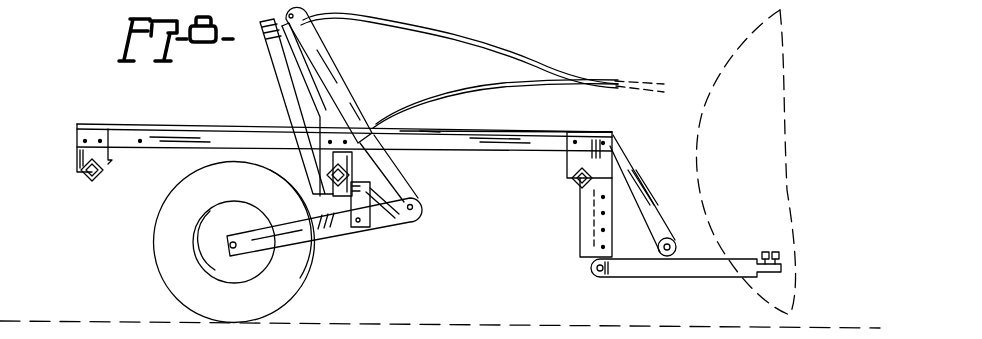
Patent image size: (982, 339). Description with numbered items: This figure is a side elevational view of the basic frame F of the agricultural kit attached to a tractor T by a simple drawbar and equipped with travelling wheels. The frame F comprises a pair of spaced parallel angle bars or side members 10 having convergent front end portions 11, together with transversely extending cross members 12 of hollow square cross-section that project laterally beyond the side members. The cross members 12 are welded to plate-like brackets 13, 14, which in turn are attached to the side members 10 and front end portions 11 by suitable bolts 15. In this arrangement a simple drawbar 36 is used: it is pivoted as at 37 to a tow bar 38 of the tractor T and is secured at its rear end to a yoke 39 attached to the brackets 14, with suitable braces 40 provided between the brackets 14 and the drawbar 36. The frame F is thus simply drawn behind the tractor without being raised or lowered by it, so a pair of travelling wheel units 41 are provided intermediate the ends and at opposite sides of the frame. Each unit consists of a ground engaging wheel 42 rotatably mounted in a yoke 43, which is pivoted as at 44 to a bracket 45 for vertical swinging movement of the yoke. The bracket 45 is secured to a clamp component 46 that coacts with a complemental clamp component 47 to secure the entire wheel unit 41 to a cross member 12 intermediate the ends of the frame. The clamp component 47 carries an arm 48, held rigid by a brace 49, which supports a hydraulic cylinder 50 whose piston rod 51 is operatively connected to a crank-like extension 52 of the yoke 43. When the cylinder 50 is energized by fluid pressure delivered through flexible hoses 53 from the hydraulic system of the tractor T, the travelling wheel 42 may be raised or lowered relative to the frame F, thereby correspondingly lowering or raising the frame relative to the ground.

The side members 10 is at (215, 135).
The convergent front end portions 11 is at (553, 150).
The cross members 12 is at (98, 180).
The plate-like brackets 13 is at (110, 162).
The plate-like brackets 14 is at (585, 232).
The bolts 15 is at (575, 122).
The drawbar 36 is at (697, 268).
The pivot 37 is at (766, 250).
The tow bar 38 is at (785, 258).
The yoke 39 is at (595, 262).
The braces 40 is at (640, 185).
The travelling wheel units 41 is at (338, 237).
The ground engaging wheel 42 is at (283, 280).
The yoke 43 is at (257, 237).
The pivot 44 is at (363, 228).
The bracket 45 is at (393, 220).
The clamp component 46 is at (370, 188).
The complemental clamp component 47 is at (327, 161).
The arm 48 is at (303, 88).
The brace 49 is at (293, 113).
The hydraulic cylinder 50 is at (335, 88).
The piston rod 51 is at (428, 130).
The crank-like extension 52 is at (413, 217).
The flexible hoses 53 is at (462, 97).
The frame F is at (524, 151).
The tractor T is at (723, 62).